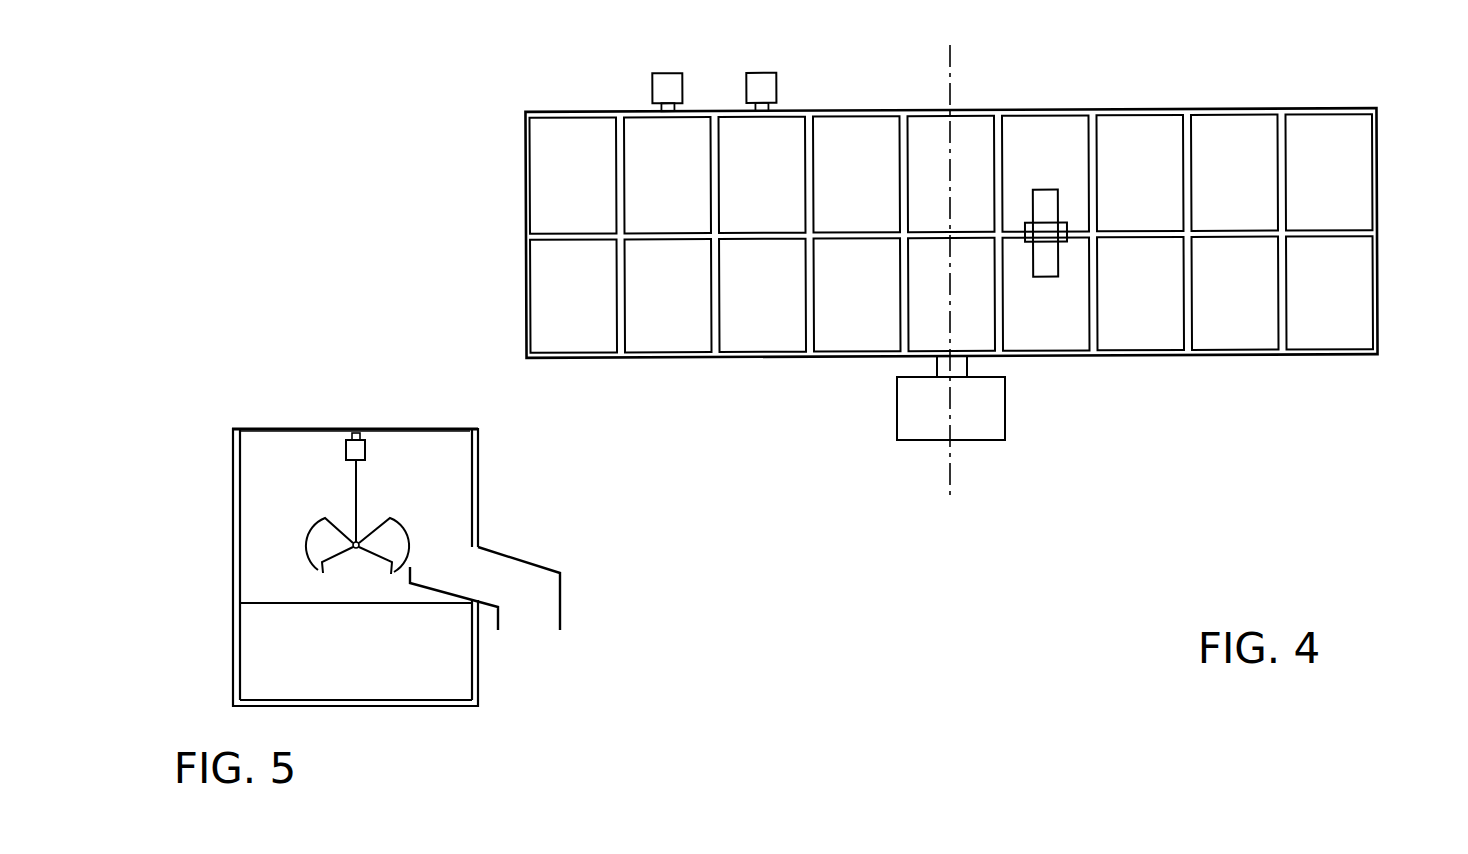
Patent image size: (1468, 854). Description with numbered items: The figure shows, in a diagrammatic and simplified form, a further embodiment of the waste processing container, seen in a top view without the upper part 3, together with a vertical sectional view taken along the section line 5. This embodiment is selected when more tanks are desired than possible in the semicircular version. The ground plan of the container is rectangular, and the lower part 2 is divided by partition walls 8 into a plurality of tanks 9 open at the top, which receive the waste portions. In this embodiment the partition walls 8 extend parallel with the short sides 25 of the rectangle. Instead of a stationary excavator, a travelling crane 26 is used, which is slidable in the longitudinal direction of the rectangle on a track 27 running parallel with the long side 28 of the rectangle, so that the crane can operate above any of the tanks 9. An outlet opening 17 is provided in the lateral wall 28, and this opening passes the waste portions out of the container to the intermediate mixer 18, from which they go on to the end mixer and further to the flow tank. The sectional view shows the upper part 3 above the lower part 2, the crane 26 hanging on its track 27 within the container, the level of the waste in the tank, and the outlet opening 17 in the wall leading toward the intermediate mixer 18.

In FIG. 5, the lower part 2 is at (204, 558).
In FIG. 5, the upper part 3 is at (268, 410).
In FIG. 4, the section line 5 is at (936, 68).
In FIG. 4, the partition walls 8 is at (1280, 300).
In FIG. 5, the partition walls 8 is at (452, 662).
In FIG. 4, the tanks 9 is at (852, 145).
In FIG. 5, the outlet opening 17 is at (445, 553).
In FIG. 4, the intermediate mixer 18 is at (987, 428).
In FIG. 4, the short sides 25 is at (523, 180).
In FIG. 4, the travelling crane 26 is at (1048, 202).
In FIG. 5, the travelling crane 26 is at (390, 540).
In FIG. 4, the track 27 is at (1133, 233).
In FIG. 5, the track 27 is at (357, 428).
In FIG. 4, the long side 28 is at (1228, 110).